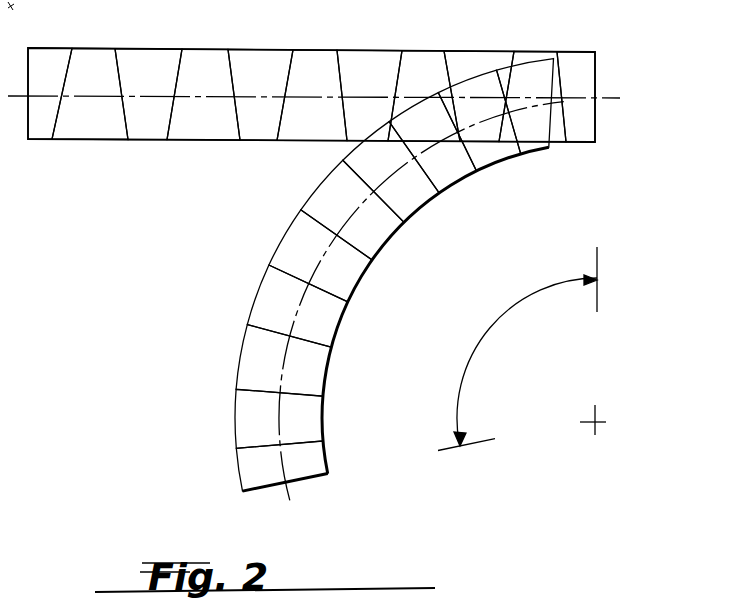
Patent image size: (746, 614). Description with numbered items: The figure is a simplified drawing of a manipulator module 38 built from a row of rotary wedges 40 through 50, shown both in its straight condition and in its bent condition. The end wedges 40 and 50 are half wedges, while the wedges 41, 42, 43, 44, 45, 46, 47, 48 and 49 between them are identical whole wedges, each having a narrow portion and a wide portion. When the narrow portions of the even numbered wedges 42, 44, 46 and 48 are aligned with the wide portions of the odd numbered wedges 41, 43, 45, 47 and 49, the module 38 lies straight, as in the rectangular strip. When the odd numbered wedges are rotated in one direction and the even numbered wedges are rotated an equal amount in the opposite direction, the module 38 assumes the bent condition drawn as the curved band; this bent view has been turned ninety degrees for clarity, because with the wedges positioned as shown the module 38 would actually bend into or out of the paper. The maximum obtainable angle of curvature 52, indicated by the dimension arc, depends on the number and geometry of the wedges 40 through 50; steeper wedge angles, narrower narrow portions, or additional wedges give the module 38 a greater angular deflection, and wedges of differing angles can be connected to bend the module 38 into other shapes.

The manipulator module 38 is at (603, 90).
The rotary wedge 40 is at (43, 139).
The rotary wedge 41 is at (88, 48).
The rotary wedge 42 is at (148, 139).
The rotary wedge 43 is at (208, 50).
The rotary wedge 44 is at (253, 141).
The rotary wedge 45 is at (310, 52).
The rotary wedge 46 is at (367, 52).
The rotary wedge 47 is at (417, 52).
The rotary wedge 48 is at (470, 52).
The rotary wedge 49 is at (532, 52).
The rotary wedge 50 is at (580, 52).
The angle of curvature 52 is at (537, 292).